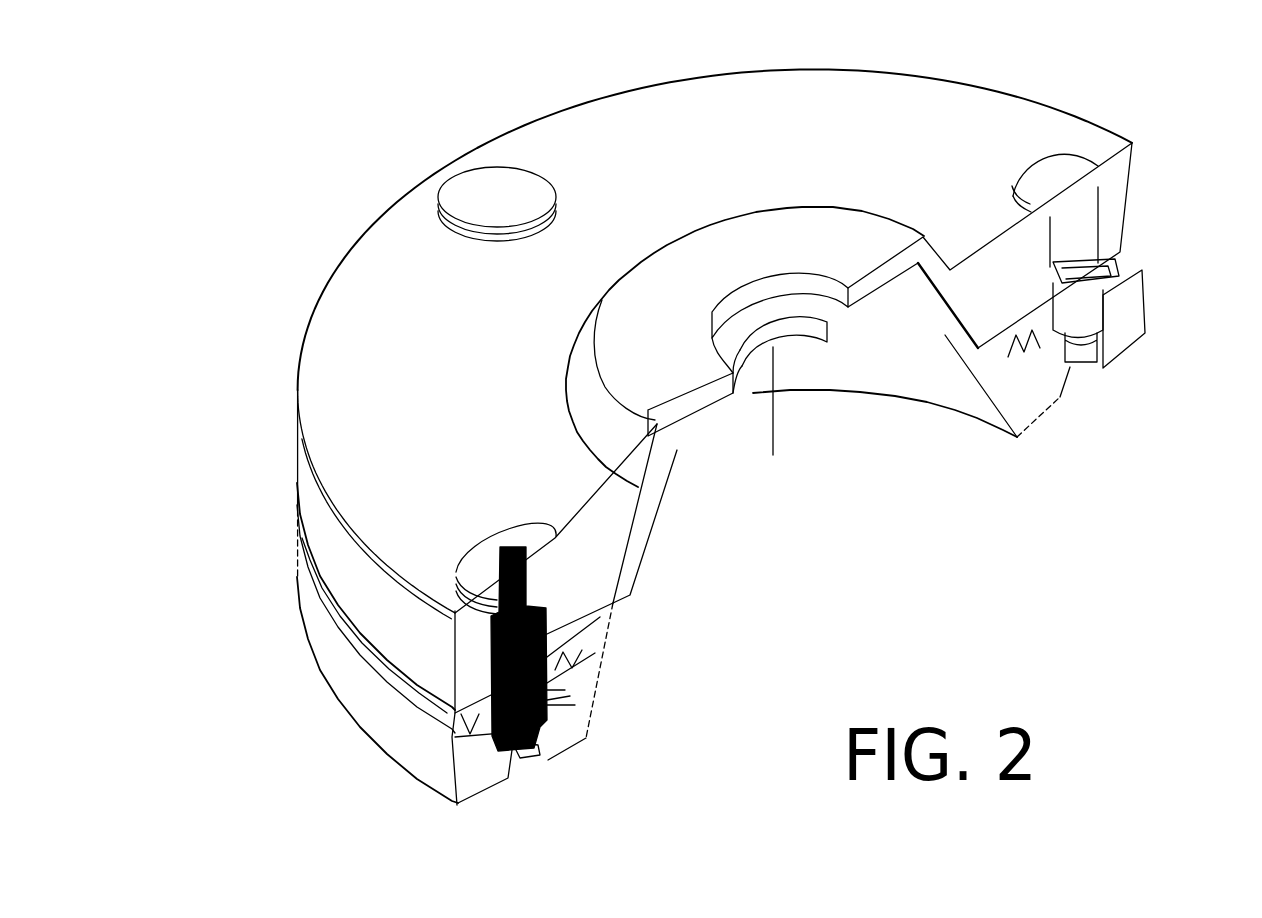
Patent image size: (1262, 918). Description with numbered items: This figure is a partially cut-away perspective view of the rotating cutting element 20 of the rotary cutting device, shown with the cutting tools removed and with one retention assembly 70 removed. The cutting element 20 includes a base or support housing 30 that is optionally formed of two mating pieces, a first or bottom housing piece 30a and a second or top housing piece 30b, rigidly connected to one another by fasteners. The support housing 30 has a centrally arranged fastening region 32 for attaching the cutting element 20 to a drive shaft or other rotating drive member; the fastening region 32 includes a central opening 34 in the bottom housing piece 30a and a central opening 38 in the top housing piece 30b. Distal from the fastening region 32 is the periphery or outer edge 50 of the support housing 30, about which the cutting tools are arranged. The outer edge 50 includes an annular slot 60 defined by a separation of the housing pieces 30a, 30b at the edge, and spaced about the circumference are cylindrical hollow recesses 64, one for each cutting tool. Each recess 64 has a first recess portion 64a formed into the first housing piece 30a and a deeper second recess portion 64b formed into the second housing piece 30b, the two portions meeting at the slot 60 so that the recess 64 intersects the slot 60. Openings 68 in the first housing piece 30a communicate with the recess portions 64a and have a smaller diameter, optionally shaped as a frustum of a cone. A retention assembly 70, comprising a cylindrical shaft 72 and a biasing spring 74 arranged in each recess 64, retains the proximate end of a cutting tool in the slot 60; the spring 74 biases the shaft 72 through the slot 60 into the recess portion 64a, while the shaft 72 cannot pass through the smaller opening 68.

The rotating cutting element 20 is at (992, 522).
The support housing 30 is at (238, 442).
The first housing piece 30a is at (880, 370).
The second housing piece 30b is at (606, 118).
The fastening region 32 is at (802, 372).
The central opening 34 is at (773, 455).
The central opening 38 is at (810, 287).
The outer edge 50 is at (418, 742).
The annular slot 60 is at (347, 637).
The recess 64 is at (570, 648).
The first recess portion 64a is at (1080, 308).
The second recess portion 64b is at (1077, 225).
The opening 68 is at (522, 752).
The retention assembly 70 is at (570, 684).
The shaft 72 is at (548, 703).
The biasing spring 74 is at (500, 557).